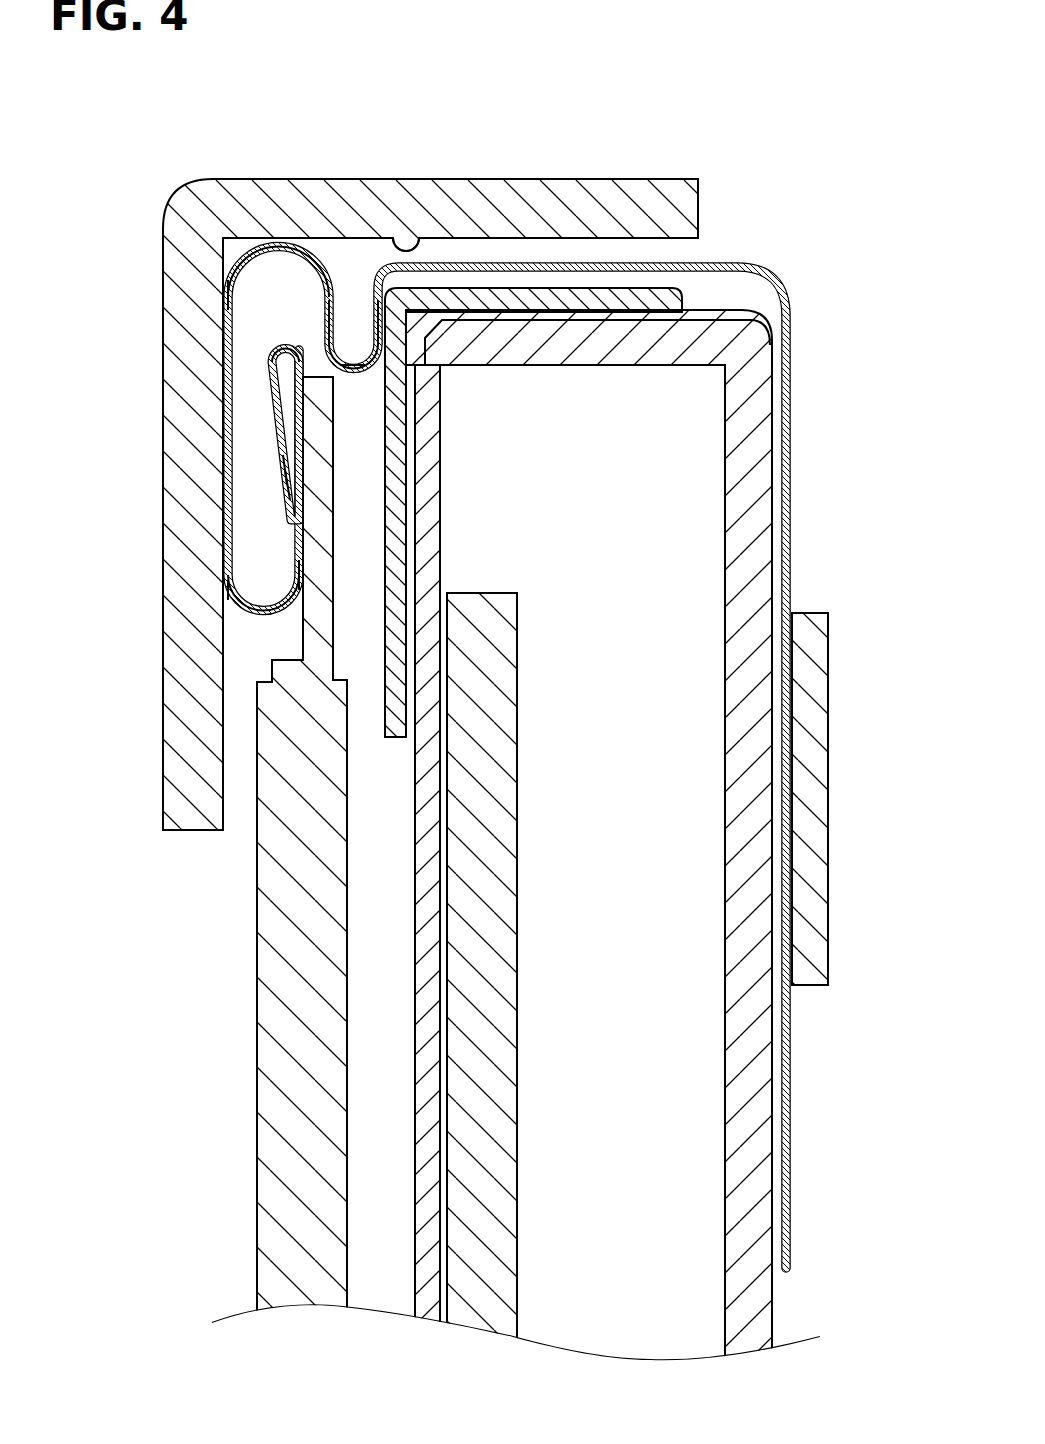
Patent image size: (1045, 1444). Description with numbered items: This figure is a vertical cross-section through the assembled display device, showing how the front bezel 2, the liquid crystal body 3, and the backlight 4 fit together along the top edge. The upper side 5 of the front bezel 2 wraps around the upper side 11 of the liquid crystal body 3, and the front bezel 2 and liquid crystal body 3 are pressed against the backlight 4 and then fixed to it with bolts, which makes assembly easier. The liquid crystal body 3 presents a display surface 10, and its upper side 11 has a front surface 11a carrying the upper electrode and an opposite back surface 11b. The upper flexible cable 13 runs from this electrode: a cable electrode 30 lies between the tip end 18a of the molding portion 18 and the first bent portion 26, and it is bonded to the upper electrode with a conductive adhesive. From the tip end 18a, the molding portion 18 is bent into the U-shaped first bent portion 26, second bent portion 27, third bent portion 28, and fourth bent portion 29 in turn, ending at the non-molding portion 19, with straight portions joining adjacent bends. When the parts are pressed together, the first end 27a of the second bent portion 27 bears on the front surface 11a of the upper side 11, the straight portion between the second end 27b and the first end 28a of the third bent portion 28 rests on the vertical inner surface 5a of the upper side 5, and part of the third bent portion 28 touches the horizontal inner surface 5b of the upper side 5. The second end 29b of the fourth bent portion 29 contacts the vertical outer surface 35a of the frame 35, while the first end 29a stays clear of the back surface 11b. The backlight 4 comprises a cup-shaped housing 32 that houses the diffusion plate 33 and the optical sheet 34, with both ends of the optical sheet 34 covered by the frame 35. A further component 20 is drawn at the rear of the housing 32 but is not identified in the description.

The front bezel 2 is at (388, 464).
The liquid crystal body 3 is at (368, 878).
The backlight 4 is at (460, 685).
The upper side 5 is at (388, 468).
The vertical inner surface 5a is at (226, 655).
The horizontal inner surface 5b is at (418, 250).
The display surface 10 is at (379, 878).
The upper side 11 is at (186, 433).
The front surface 11a is at (294, 505).
The back surface 11b is at (333, 532).
The upper flexible cable 13 is at (662, 846).
The molding portion 18 is at (352, 270).
The tip end 18a is at (294, 490).
The non-molding portion 19 is at (421, 685).
The circuit board 20 is at (830, 720).
The first bent portion 26 is at (283, 341).
The second bent portion 27 is at (268, 612).
The first end 27a is at (318, 598).
The second end 27b is at (222, 592).
The third bent portion 28 is at (276, 238).
The first end 28a is at (222, 292).
The fourth bent portion 29 is at (378, 403).
The first end 29a is at (308, 375).
The second end 29b is at (390, 343).
The cable electrode 30 is at (305, 440).
The housing 32 is at (725, 560).
The diffusion plate 33 is at (492, 592).
The optical sheet 34 is at (440, 565).
The frame 35 is at (618, 504).
The vertical outer surface 35a is at (406, 640).